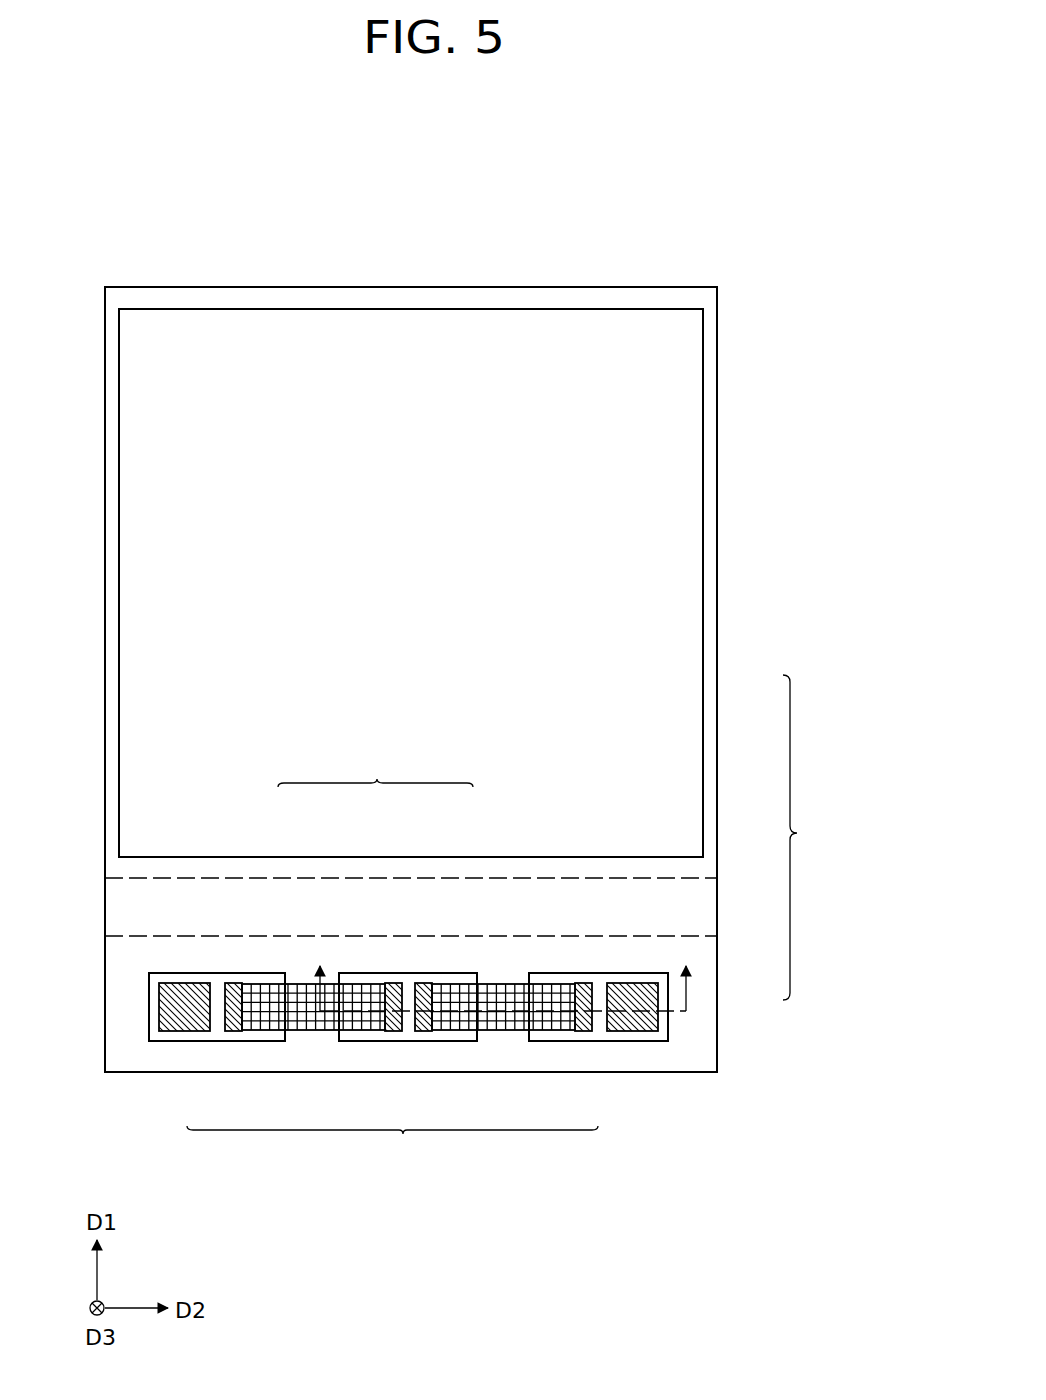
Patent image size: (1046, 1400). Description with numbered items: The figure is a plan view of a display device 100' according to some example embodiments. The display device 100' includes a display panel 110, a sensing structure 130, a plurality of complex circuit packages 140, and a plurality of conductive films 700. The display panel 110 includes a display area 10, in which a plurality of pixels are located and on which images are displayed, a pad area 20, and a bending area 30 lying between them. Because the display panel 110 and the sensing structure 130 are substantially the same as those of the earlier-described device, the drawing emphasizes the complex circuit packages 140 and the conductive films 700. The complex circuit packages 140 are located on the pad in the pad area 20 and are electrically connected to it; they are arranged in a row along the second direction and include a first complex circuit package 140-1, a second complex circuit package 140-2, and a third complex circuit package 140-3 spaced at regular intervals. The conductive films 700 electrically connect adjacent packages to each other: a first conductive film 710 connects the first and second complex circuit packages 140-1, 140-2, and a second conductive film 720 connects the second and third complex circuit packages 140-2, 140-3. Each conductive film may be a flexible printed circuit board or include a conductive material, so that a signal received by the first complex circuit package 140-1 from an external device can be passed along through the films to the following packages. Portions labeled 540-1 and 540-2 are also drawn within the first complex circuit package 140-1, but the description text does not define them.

The display device 100' is at (476, 674).
The display area 10 is at (718, 688).
The sensing structure 130 is at (705, 432).
The display panel 110 is at (815, 837).
The bending area 30 is at (712, 902).
The pad area 20 is at (712, 995).
The complex circuit packages 140 is at (408, 1070).
The third complex circuit package 140-3 is at (216, 1041).
The second complex circuit package 140-2 is at (409, 1042).
The first complex circuit package 140-1 is at (560, 1042).
The conductive films 700 is at (400, 892).
The second conductive film 720 is at (303, 990).
The first conductive film 710 is at (455, 990).
The second contact portion 540-2 is at (582, 1032).
The first contact portion 540-1 is at (658, 1023).